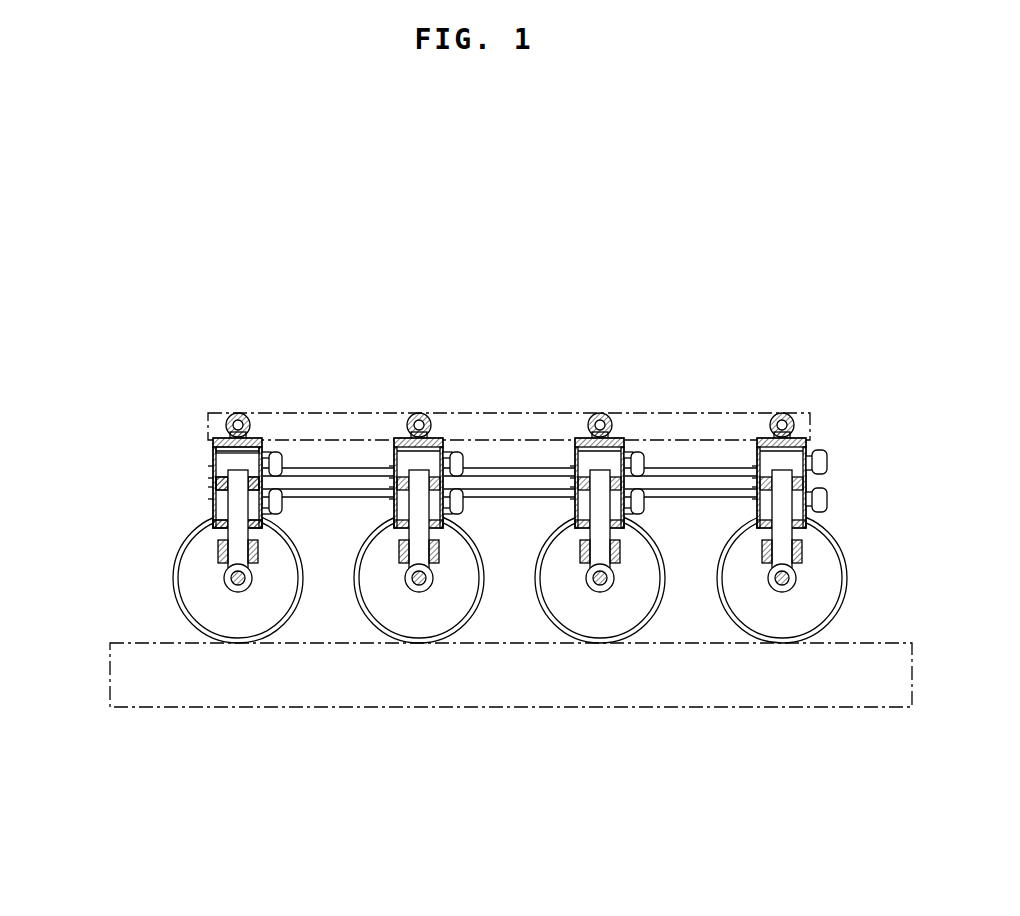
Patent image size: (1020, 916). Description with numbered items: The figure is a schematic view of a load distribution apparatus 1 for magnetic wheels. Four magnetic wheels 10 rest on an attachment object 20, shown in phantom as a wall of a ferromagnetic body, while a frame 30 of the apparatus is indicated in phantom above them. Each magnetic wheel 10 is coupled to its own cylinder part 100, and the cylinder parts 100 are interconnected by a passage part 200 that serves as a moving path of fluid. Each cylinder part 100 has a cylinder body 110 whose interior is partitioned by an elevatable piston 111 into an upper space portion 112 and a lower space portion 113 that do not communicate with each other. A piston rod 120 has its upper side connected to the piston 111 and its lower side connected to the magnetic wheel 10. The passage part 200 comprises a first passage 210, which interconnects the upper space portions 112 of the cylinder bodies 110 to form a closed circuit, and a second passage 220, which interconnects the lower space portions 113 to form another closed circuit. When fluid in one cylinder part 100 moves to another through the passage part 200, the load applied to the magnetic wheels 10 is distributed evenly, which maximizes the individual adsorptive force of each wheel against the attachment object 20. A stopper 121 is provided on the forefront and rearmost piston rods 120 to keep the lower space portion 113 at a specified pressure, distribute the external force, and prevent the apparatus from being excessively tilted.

The load distribution apparatus 1 is at (225, 313).
The magnetic wheel 10 is at (238, 627).
The attachment object 20 is at (512, 684).
The frame 30 is at (547, 426).
The cylinder part 100 is at (467, 459).
The cylinder body 110 is at (465, 422).
The piston 111 is at (220, 482).
The upper space portion 112 is at (222, 458).
The lower space portion 113 is at (220, 505).
The piston rod 120 is at (234, 555).
The stopper 121 is at (220, 552).
The passage part 200 is at (544, 411).
The first passage 210 is at (313, 471).
The second passage 220 is at (357, 492).